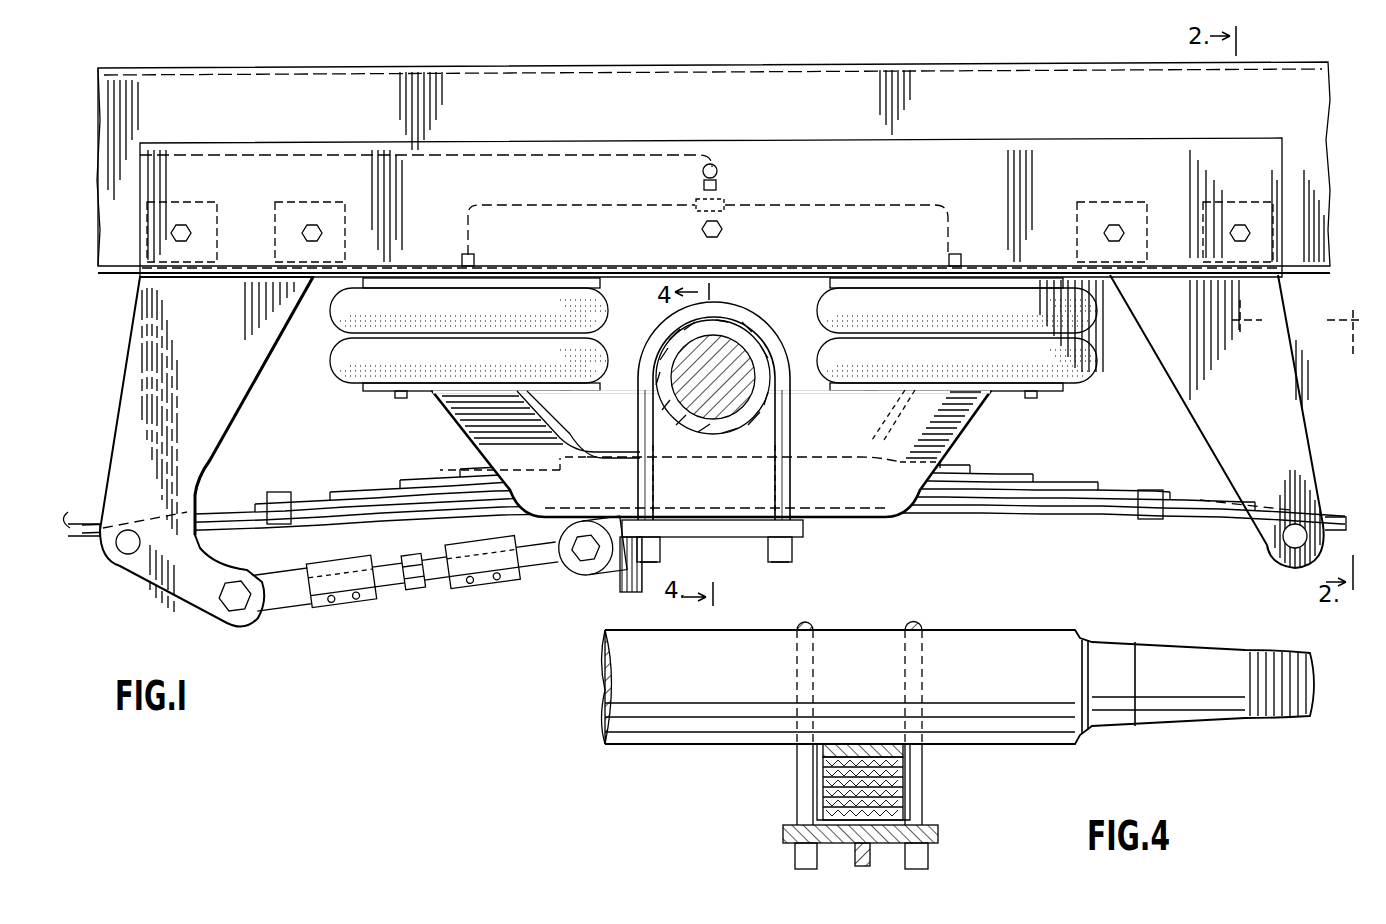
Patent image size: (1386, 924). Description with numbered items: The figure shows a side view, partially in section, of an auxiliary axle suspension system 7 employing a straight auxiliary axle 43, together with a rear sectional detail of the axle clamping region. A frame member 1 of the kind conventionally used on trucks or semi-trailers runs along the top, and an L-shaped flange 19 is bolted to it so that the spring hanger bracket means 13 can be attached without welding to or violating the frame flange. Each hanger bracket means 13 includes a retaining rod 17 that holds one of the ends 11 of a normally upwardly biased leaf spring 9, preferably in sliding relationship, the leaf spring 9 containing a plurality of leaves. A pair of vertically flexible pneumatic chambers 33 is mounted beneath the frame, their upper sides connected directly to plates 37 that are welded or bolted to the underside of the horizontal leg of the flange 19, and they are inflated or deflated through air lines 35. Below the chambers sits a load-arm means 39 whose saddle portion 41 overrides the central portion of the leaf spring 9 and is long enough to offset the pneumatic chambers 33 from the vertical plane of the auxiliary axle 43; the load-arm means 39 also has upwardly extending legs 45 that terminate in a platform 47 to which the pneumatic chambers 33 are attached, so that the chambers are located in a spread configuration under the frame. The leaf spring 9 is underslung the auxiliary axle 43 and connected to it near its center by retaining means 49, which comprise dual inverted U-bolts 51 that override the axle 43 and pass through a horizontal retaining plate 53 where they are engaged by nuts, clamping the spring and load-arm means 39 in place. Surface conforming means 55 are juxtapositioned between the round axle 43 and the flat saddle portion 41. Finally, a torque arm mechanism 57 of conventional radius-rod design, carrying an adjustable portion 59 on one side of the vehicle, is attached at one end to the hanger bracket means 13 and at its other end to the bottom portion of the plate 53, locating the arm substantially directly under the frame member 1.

In FIG. 1, the frame member 1 is at (1328, 75).
In FIG. 1, the auxiliary axle suspension system 7 is at (1334, 432).
In FIG. 1, the leaf spring 9 is at (1030, 478).
In FIG. 1, the spring ends 11 is at (1334, 517).
In FIG. 1, the spring hanger bracket means 13 is at (128, 395).
In FIG. 1, the retaining rod 17 is at (125, 556).
In FIG. 1, the L-shaped flange 19 is at (1282, 165).
In FIG. 1, the pneumatic chambers 33 is at (335, 365).
In FIG. 1, the air lines 35 is at (908, 205).
In FIG. 1, the plates 37 is at (445, 278).
In FIG. 1, the load-arm means 39 is at (930, 432).
In FIG. 4, the load-arm means 39 is at (905, 780).
In FIG. 1, the saddle portion 41 is at (818, 460).
In FIG. 4, the saddle portion 41 is at (862, 748).
In FIG. 1, the auxiliary axle 43 is at (755, 345).
In FIG. 4, the auxiliary axle 43 is at (1197, 655).
In FIG. 1, the upwardly extending legs 45 is at (470, 425).
In FIG. 1, the platform 47 is at (560, 392).
In FIG. 1, the retaining means 49 is at (821, 526).
In FIG. 1, the bolts 51 is at (645, 352).
In FIG. 4, the bolts 51 is at (803, 617).
In FIG. 1, the plate 53 is at (730, 540).
In FIG. 4, the plate 53 is at (940, 835).
In FIG. 1, the surface conforming means 55 is at (765, 420).
In FIG. 1, the torque arm mechanism 57 is at (480, 592).
In FIG. 4, the torque arm mechanism 57 is at (860, 868).
In FIG. 1, the adjustable portion 59 is at (425, 590).